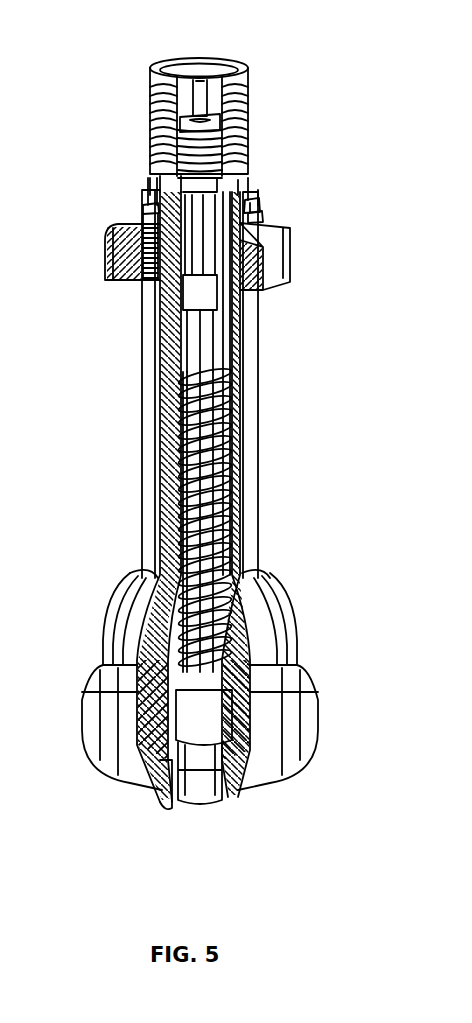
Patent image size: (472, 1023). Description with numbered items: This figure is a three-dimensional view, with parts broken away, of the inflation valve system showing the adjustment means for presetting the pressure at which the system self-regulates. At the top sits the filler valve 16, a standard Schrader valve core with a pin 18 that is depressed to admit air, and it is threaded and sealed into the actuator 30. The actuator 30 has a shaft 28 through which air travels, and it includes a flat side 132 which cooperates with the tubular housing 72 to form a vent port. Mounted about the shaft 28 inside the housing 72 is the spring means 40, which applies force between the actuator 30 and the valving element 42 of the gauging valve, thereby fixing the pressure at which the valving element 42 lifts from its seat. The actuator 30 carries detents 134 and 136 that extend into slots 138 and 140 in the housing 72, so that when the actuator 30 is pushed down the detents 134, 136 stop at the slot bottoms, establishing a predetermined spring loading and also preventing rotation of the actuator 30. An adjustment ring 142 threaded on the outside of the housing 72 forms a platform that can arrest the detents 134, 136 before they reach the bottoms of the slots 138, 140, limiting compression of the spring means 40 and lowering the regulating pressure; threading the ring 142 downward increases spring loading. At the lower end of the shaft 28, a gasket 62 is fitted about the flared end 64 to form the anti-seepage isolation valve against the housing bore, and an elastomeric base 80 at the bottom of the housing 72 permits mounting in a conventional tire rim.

The filler valve 16 is at (178, 68).
The pin 18 is at (203, 80).
The actuator 30 is at (150, 175).
The flat side 132 is at (250, 192).
The detent 134 is at (145, 207).
The detent 136 is at (254, 204).
The slot 138 is at (122, 218).
The slot 140 is at (264, 215).
The adjustment ring 142 is at (277, 233).
The tubular housing 72 is at (259, 372).
The spring means 40 is at (160, 435).
The shaft 28 is at (200, 447).
The elastomeric base 80 is at (280, 596).
The valving element 42 is at (210, 740).
The valving element or gasket 62 is at (163, 795).
The flared end 64 is at (200, 792).